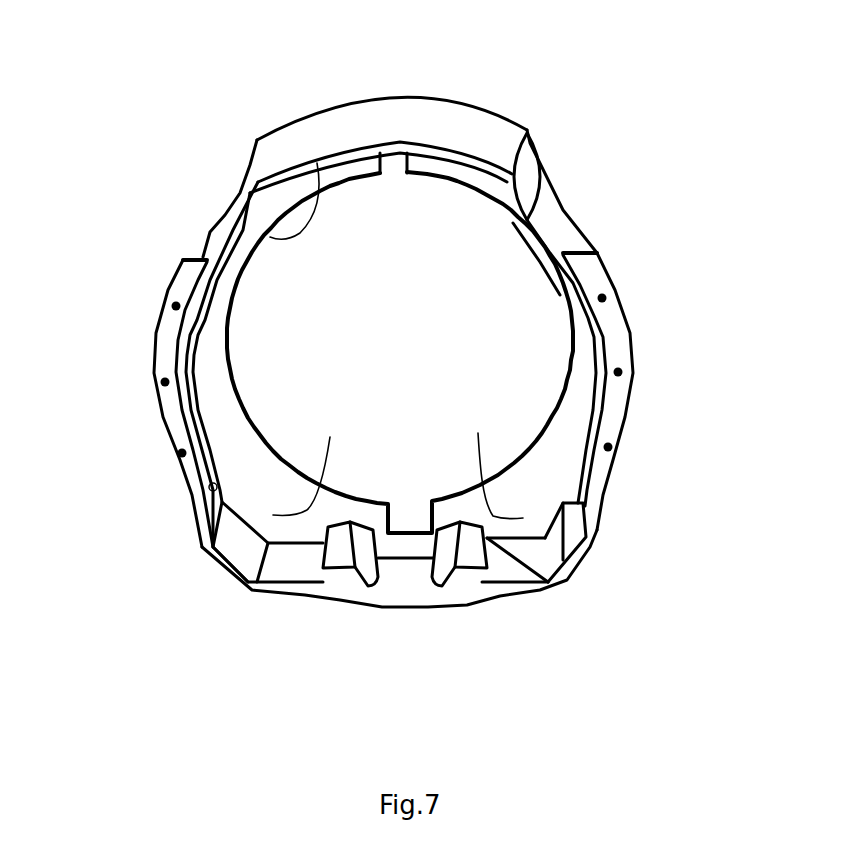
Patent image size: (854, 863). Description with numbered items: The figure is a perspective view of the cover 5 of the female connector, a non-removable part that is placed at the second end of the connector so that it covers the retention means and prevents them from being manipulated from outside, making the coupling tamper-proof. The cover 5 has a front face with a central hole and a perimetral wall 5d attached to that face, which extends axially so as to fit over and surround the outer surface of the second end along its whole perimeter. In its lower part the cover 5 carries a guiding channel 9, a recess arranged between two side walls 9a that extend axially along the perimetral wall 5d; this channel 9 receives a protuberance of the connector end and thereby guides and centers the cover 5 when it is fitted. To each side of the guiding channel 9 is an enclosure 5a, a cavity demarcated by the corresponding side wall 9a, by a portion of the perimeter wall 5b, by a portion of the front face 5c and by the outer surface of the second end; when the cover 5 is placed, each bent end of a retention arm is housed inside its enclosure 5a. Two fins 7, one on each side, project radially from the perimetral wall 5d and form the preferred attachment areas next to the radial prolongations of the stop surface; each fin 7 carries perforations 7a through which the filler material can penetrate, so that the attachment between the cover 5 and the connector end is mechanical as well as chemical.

The cover 5 is at (304, 80).
The enclosure 5a is at (233, 543).
The perimeter wall 5b is at (200, 495).
The front face 5c is at (398, 460).
The perimetral wall 5d is at (262, 232).
The fin 7 is at (165, 345).
The perforation 7a is at (171, 302).
The guiding channel 9 is at (385, 600).
The side wall 9a is at (330, 572).